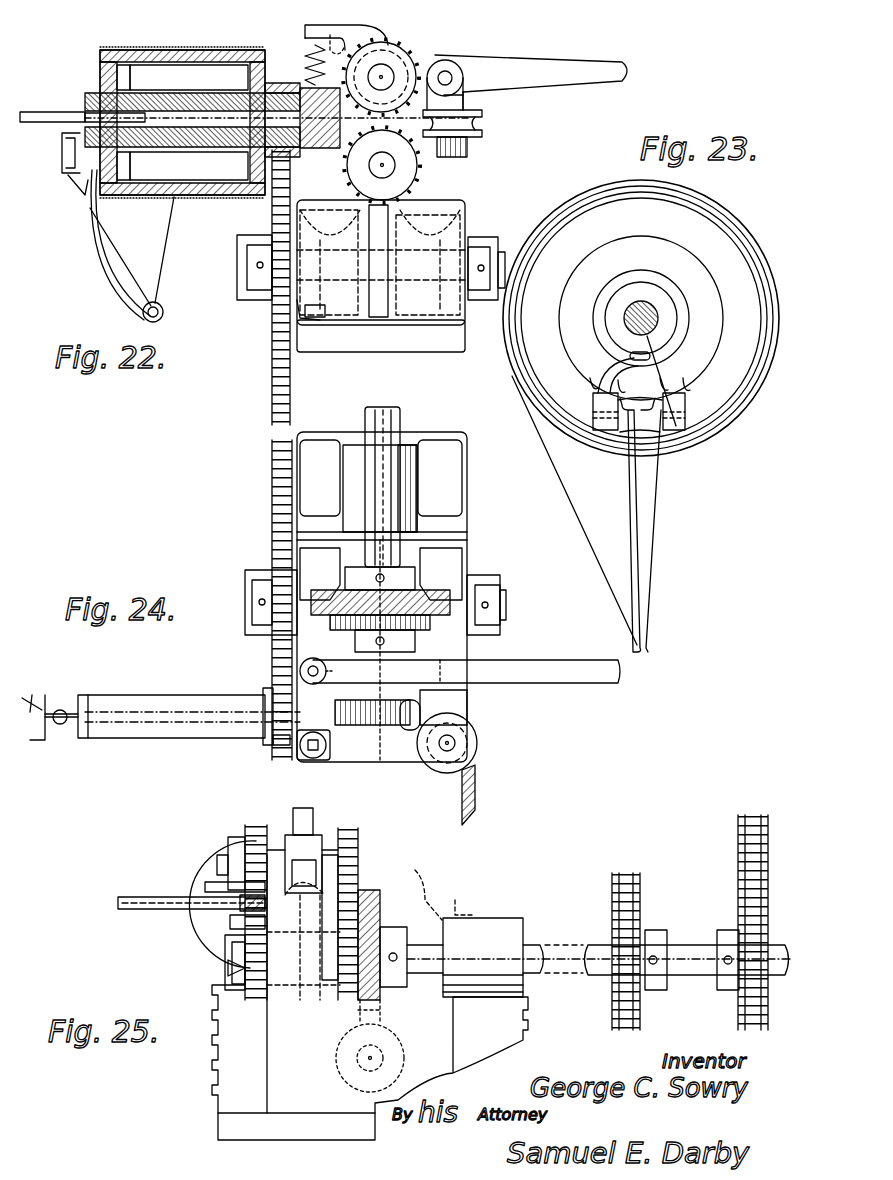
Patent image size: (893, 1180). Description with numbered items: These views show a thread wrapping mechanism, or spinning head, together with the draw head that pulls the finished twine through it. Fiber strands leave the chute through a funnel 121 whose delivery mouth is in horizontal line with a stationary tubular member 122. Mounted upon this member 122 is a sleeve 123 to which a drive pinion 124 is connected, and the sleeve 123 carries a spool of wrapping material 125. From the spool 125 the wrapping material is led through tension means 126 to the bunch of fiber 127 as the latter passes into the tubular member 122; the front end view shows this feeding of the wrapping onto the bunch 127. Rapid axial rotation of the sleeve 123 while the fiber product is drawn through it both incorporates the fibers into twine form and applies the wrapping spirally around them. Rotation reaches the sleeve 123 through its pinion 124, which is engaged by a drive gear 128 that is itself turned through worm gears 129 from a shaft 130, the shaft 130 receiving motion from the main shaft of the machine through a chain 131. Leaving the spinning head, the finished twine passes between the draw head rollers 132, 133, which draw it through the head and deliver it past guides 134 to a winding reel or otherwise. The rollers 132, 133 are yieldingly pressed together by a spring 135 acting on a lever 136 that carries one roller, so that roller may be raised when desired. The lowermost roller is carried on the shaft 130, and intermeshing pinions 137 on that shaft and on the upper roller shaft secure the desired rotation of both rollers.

In FIG. 24, the funnel 121 is at (32, 700).
In FIG. 22, the stationary tubular member 122 is at (85, 101).
In FIG. 24, the stationary tubular member 122 is at (118, 732).
In FIG. 22, the sleeve 123 is at (95, 92).
In FIG. 24, the sleeve 123 is at (263, 692).
In FIG. 24, the drive pinion 124 is at (278, 742).
In FIG. 23, the spool of wrapping material 125 is at (722, 408).
In FIG. 22, the tension means 126 is at (98, 275).
In FIG. 23, the tension means 126 is at (630, 520).
In FIG. 22, the bunch of fiber 127 is at (45, 122).
In FIG. 23, the bunch of fiber 127 is at (652, 307).
In FIG. 24, the bunch of fiber 127 is at (67, 705).
In FIG. 22, the drive gear 128 is at (272, 352).
In FIG. 24, the drive gear 128 is at (265, 461).
In FIG. 25, the drive gear 128 is at (428, 906).
In FIG. 24, the worm gears 129 is at (452, 592).
In FIG. 25, the worm gears 129 is at (376, 893).
In FIG. 22, the shaft 130 is at (382, 165).
In FIG. 24, the shaft 130 is at (365, 418).
In FIG. 25, the shaft 130 is at (426, 985).
In FIG. 25, the chain 131 is at (640, 893).
In FIG. 22, the draw head roller 132 is at (381, 77).
In FIG. 25, the draw head roller 132 is at (234, 842).
In FIG. 22, the draw head roller 133 is at (405, 172).
In FIG. 25, the draw head roller 133 is at (222, 967).
In FIG. 24, the guides 134 is at (447, 768).
In FIG. 25, the guides 134 is at (203, 915).
In FIG. 24, the spring 135 is at (300, 663).
In FIG. 22, the lever 136 is at (562, 84).
In FIG. 24, the lever 136 is at (535, 668).
In FIG. 25, the lever 136 is at (312, 812).
In FIG. 24, the intermeshing pinions 137 is at (420, 754).
In FIG. 25, the intermeshing pinions 137 is at (260, 826).